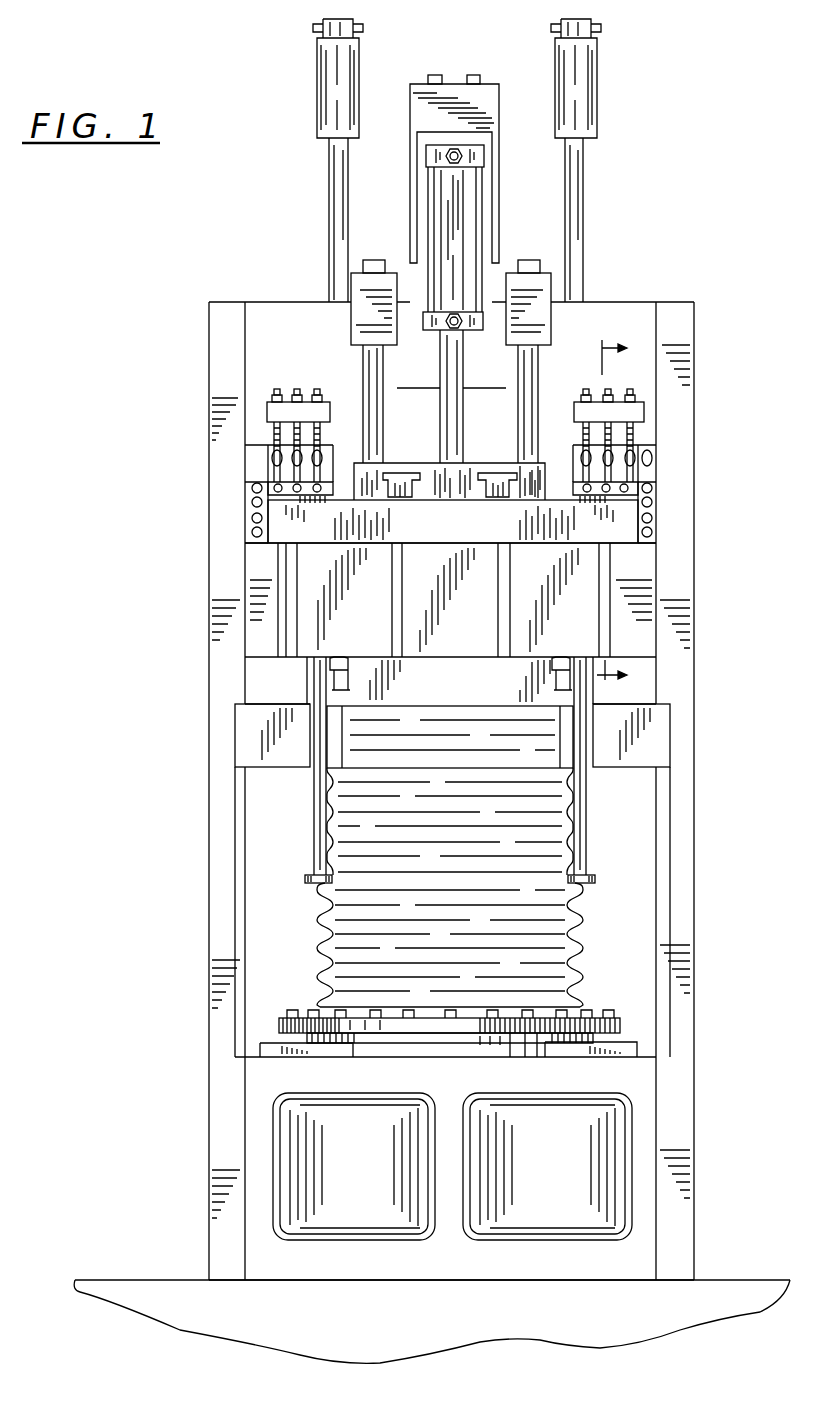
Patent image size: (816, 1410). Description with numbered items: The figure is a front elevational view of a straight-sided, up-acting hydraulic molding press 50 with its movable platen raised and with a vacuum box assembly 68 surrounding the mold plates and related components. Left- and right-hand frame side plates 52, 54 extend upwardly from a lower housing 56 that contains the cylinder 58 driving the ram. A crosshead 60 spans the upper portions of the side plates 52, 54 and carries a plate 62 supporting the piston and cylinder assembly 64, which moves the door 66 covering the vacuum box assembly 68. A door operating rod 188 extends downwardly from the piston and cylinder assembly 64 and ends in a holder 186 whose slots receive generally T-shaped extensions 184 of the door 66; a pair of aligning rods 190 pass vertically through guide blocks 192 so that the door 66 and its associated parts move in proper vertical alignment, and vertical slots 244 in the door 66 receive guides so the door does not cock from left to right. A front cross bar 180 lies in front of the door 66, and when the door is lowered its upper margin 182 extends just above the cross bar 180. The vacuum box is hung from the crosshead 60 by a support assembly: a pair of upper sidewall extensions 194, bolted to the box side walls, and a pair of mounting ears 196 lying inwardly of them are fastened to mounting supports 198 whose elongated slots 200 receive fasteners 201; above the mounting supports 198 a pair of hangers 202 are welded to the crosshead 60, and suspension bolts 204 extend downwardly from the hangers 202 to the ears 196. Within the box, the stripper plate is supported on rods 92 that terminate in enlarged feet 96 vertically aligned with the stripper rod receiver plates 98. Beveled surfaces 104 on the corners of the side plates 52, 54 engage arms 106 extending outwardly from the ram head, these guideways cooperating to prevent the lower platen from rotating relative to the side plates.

The molding press 50 is at (160, 402).
The left-hand frame side plate 52 is at (209, 920).
The right-hand frame side plate 54 is at (694, 915).
The lower housing 56 is at (625, 1268).
The cylinder 58 is at (637, 1048).
The crosshead 60 is at (288, 308).
The plate 62 is at (487, 221).
The piston and cylinder assembly 64 is at (447, 224).
The door 66 is at (585, 630).
The vacuum box assembly 68 is at (240, 640).
The rods 92 is at (585, 825).
The enlarged feet 96 is at (318, 880).
The stripper rod receiver plates 98 is at (625, 1022).
The beveled surfaces 104 is at (240, 805).
The arms 106 is at (250, 720).
The front cross bar 180 is at (630, 530).
The upper margin 182 is at (565, 500).
The T-shaped extensions 184 is at (400, 490).
The holder 186 is at (475, 470).
The door operating rod 188 is at (459, 373).
The aligning rods 190 is at (368, 392).
The guide blocks 192 is at (351, 330).
The upper sidewall extensions 194 is at (257, 505).
The mounting ears 196 is at (258, 535).
The mounting supports 198 is at (258, 462).
The elongated slots 200 is at (260, 488).
The fasteners 201 is at (313, 460).
The hangers 202 is at (280, 425).
The suspension bolts 204 is at (265, 420).
The vertical slots 244 is at (655, 645).